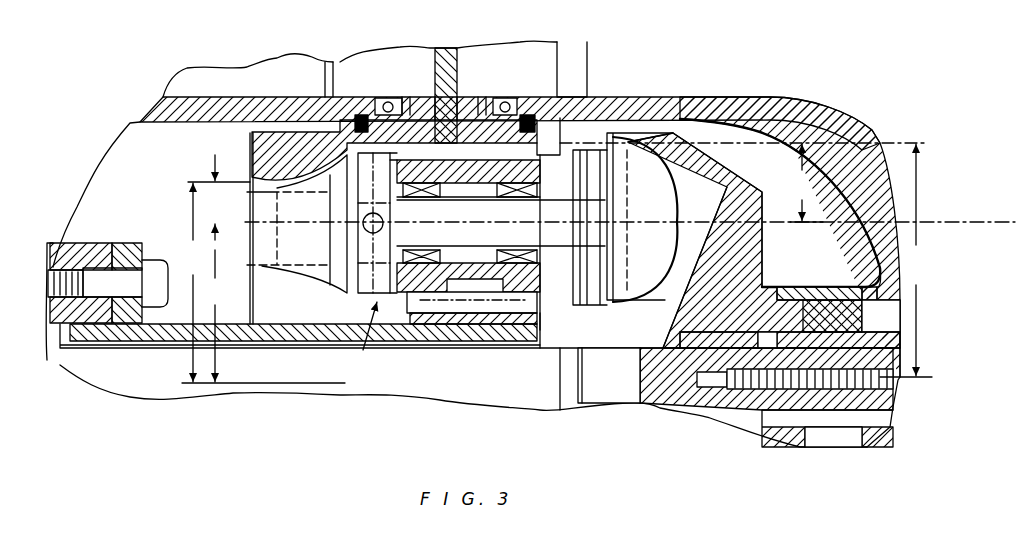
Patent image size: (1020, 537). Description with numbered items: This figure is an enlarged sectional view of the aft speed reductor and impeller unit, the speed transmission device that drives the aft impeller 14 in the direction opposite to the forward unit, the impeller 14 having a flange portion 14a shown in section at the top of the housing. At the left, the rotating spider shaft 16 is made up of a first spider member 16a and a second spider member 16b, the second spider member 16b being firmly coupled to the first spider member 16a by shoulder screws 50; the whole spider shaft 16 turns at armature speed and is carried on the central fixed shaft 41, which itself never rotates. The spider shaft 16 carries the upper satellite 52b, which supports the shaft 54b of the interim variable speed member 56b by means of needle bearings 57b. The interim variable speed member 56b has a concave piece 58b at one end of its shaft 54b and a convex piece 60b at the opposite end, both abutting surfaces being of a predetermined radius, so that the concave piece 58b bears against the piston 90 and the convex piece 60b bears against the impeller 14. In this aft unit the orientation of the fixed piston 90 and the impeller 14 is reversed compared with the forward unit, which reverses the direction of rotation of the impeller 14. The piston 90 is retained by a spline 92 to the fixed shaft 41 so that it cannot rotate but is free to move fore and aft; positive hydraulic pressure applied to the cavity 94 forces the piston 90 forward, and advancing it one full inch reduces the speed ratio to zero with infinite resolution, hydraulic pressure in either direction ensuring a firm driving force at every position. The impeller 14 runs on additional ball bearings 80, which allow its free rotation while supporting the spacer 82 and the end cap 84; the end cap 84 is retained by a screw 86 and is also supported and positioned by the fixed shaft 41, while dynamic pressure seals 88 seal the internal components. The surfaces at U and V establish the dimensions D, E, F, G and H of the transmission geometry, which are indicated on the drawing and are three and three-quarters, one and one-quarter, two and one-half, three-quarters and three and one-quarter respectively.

The impeller 14 is at (464, 88).
The flange 14a is at (440, 62).
The spider shaft 16 is at (150, 346).
The first spider member 16a is at (88, 242).
The second spider member 16b is at (273, 337).
The central fixed shaft 41 is at (460, 367).
The shoulder screws 50 is at (153, 262).
The satellite 52b is at (418, 163).
The shaft 54b is at (560, 340).
The interim variable speed member 56b is at (363, 350).
The needle bearings 57b is at (540, 180).
The concave piece 58b is at (312, 243).
The convex piece 60b is at (630, 290).
The ball bearings 80 is at (358, 116).
The spacer 82 is at (238, 100).
The end cap 84 is at (787, 70).
The screw 86 is at (792, 375).
The dynamic pressure seals 88 is at (388, 98).
The piston 90 is at (690, 157).
The spline 92 is at (697, 348).
The cavity 94 is at (878, 300).
The surface U is at (302, 172).
The surface V is at (633, 143).
The dimension D is at (906, 260).
The dimension E is at (806, 183).
The dimension F is at (216, 316).
The dimension G is at (216, 197).
The dimension H is at (263, 282).